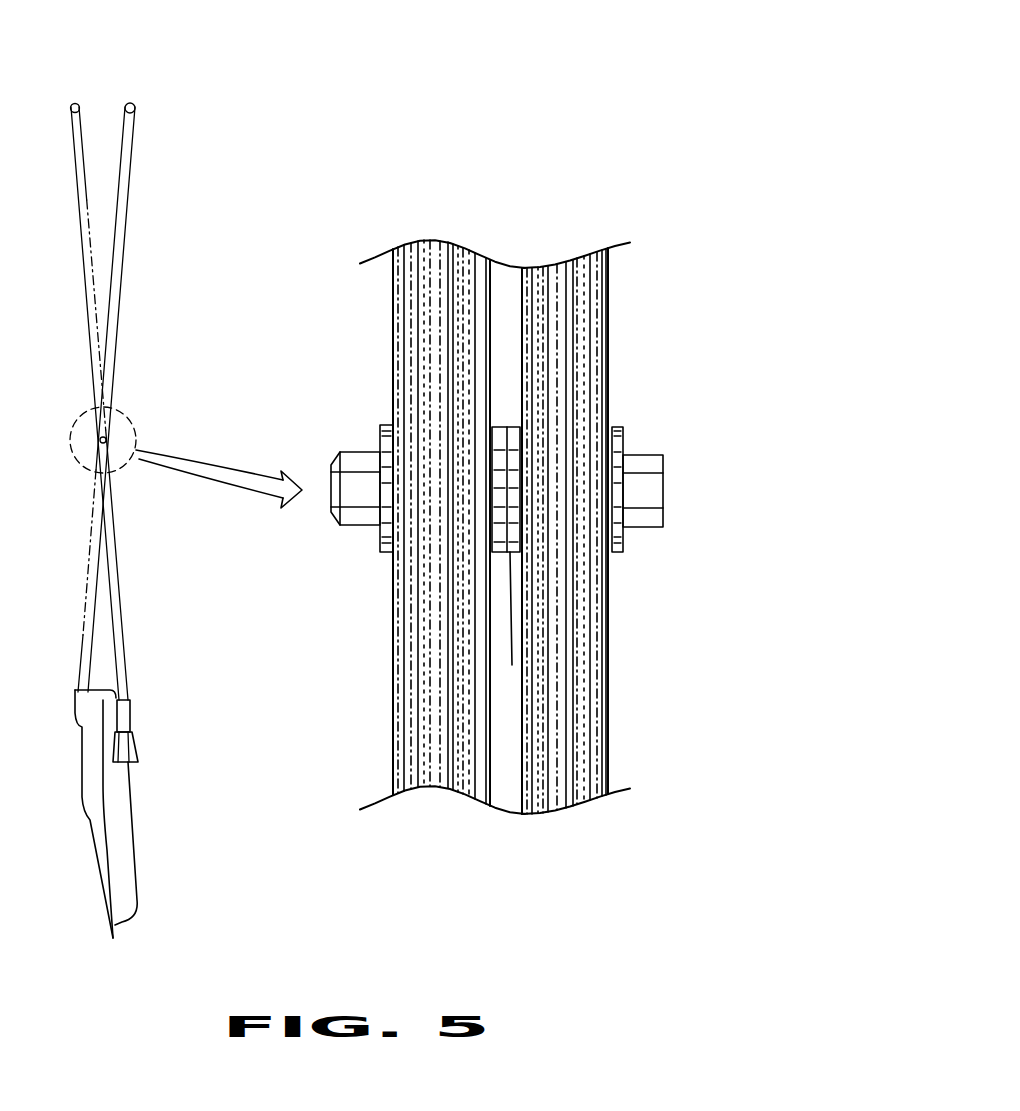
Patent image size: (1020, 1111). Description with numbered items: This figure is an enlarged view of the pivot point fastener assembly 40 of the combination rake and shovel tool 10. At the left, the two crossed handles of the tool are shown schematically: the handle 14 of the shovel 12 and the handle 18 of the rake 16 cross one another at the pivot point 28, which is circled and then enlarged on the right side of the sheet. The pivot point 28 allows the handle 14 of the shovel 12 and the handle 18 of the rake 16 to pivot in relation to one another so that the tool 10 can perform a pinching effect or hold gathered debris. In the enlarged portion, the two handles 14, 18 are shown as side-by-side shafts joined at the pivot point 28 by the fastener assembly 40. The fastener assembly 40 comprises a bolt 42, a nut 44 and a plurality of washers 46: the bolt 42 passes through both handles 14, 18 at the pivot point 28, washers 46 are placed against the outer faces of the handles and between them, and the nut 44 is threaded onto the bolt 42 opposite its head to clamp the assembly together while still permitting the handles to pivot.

The combination rake and shovel tool 10 is at (626, 103).
The shovel 12 is at (92, 825).
The handle of the shovel 14 is at (120, 250).
The rake 16 is at (138, 740).
The handle of the rake 18 is at (90, 260).
The pivot point 28 is at (134, 417).
The pivot point fastener assembly 40 is at (346, 396).
The bolt 42 is at (331, 472).
The nut 44 is at (663, 488).
The washers 46 is at (502, 425).